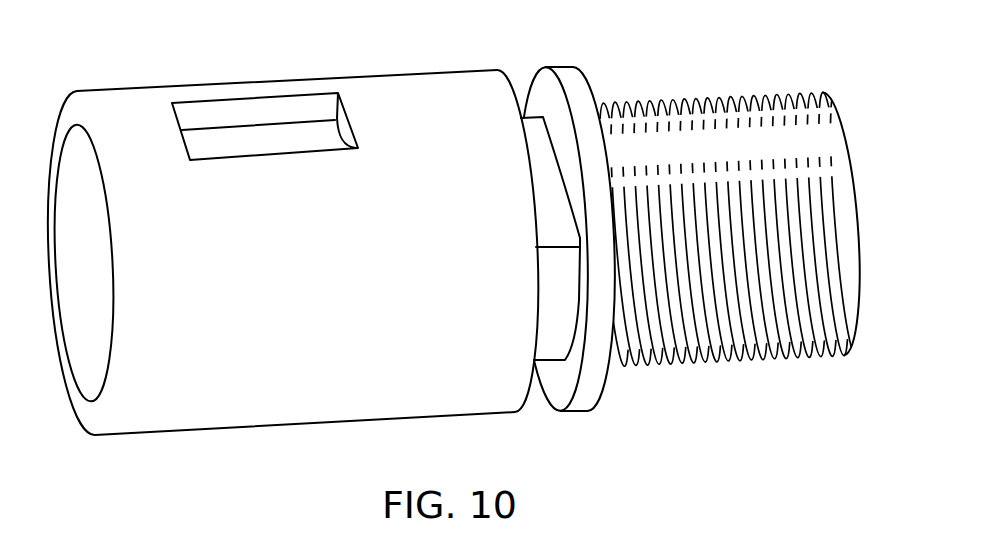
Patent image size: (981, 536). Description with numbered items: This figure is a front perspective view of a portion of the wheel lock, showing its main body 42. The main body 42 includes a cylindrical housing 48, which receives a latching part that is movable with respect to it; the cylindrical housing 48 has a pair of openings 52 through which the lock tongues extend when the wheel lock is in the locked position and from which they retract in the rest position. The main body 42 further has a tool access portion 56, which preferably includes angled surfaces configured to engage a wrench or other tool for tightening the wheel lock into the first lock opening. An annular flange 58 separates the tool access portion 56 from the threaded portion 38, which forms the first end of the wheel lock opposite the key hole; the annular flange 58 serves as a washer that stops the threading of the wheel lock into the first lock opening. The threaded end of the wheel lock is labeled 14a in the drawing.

The cylindrical housing 48 is at (314, 255).
The openings 52 is at (253, 113).
The annular flange 58 is at (562, 66).
The tool access portion 56 is at (557, 318).
The threaded portion 38 is at (695, 364).
The threaded pipe end 14a is at (855, 300).
The main body 42 is at (259, 452).